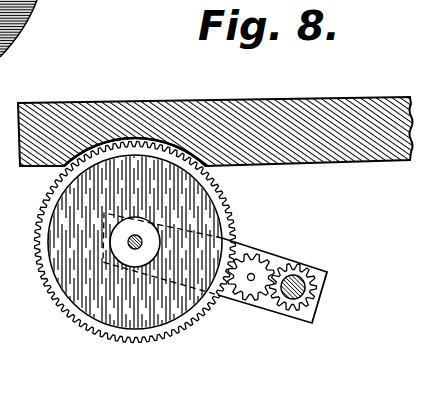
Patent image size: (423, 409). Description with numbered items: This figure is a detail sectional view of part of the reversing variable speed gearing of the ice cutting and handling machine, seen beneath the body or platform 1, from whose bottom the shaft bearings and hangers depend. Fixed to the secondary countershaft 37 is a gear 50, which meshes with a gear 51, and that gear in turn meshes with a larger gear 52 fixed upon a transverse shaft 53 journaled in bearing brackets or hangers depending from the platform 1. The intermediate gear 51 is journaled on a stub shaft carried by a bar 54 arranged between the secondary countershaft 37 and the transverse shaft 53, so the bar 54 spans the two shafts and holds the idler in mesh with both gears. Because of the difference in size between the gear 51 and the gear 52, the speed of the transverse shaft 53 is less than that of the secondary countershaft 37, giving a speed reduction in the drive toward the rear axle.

The body or platform 1 is at (357, 106).
The gear 52 is at (127, 320).
The transverse shaft 53 is at (129, 239).
The bar 54 is at (238, 252).
The gear 51 is at (251, 289).
The gear 50 is at (296, 304).
The secondary countershaft 37 is at (304, 277).